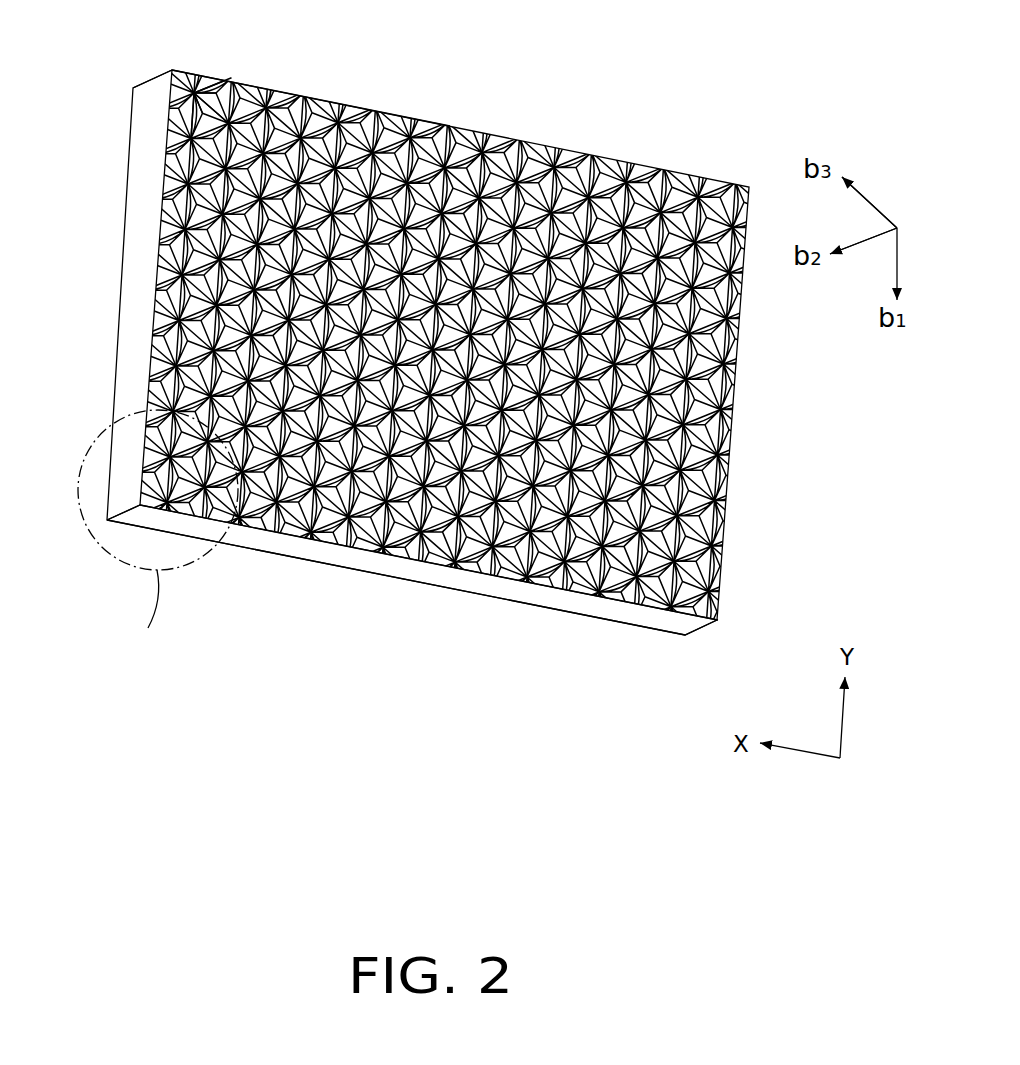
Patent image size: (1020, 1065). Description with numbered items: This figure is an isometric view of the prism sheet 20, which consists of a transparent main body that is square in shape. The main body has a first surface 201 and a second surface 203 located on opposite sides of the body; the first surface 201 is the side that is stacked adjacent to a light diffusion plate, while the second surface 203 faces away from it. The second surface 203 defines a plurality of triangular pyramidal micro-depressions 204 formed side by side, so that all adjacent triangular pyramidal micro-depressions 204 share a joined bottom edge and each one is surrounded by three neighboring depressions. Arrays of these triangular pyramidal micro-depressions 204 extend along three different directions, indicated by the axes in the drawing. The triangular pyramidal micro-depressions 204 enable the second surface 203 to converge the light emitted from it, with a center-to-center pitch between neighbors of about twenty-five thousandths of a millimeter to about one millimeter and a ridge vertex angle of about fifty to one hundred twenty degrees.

The prism sheet 20 is at (525, 62).
The first surface 201 is at (395, 580).
The second surface 203 is at (172, 68).
The triangular pyramidal micro-depressions 204 is at (187, 93).